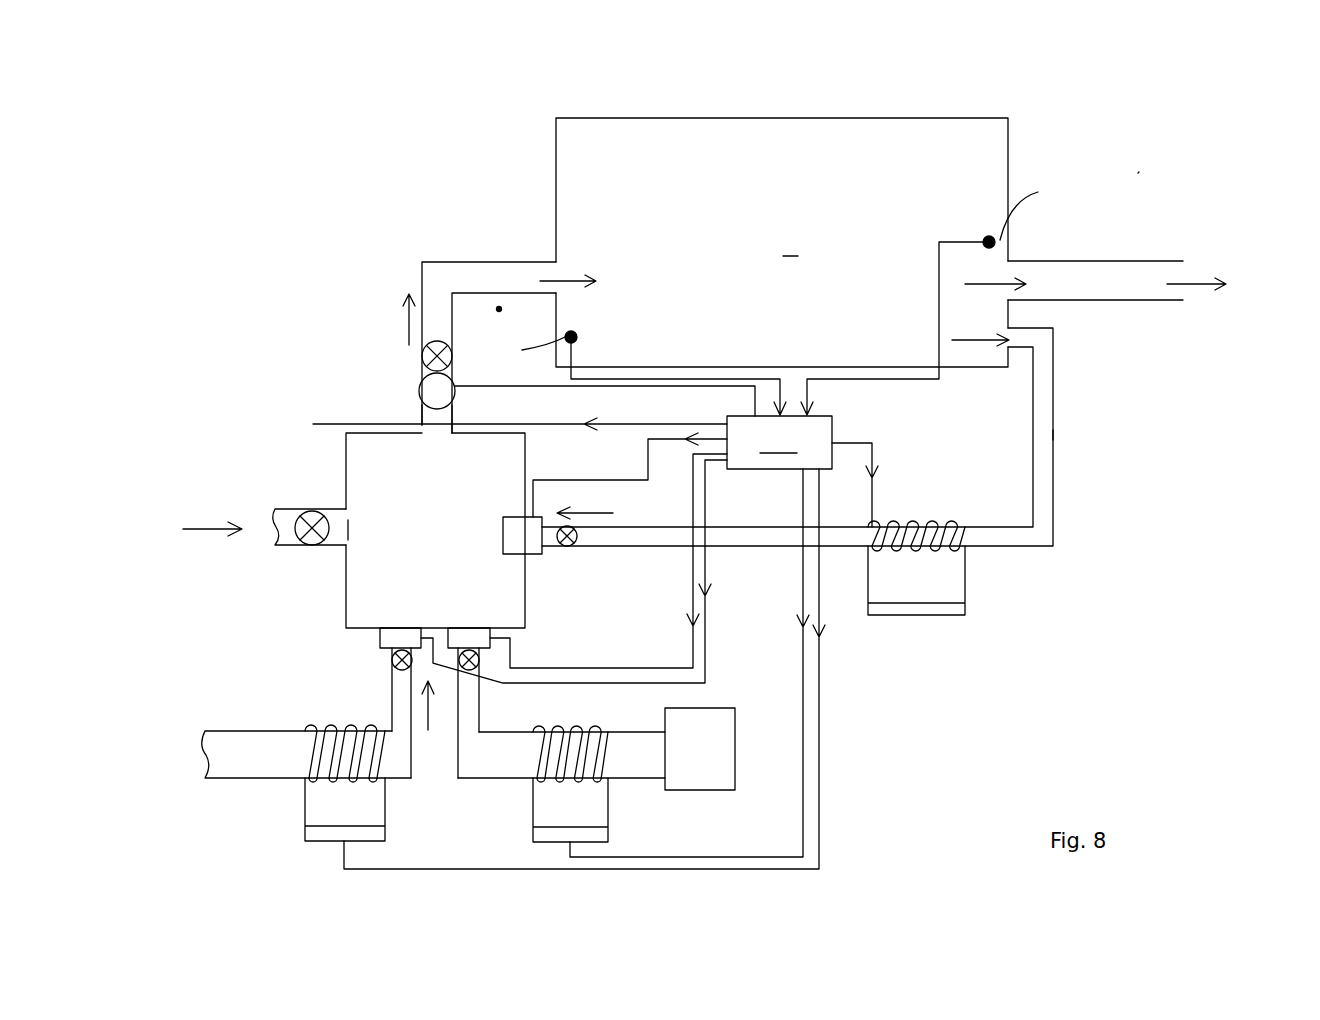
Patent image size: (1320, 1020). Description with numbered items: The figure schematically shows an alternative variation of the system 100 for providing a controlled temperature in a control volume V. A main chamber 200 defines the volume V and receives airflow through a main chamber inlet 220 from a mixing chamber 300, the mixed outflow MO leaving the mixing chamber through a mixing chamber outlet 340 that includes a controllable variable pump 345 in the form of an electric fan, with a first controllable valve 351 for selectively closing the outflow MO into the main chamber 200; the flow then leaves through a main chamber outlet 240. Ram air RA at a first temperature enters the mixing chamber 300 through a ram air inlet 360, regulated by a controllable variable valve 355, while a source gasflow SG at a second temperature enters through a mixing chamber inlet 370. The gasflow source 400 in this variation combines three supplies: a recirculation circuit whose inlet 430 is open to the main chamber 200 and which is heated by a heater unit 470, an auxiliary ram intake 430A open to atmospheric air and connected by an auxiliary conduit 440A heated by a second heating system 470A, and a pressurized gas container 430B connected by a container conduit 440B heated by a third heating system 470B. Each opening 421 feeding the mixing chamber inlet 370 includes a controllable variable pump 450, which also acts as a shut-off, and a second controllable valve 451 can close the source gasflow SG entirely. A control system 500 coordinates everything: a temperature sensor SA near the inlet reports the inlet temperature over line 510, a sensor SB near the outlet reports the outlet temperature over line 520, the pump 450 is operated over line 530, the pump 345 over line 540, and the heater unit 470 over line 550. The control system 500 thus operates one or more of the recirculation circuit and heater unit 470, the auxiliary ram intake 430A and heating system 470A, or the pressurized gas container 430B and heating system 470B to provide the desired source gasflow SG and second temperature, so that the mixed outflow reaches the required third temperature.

The system 100 is at (1133, 162).
The main chamber 200 is at (1008, 158).
The main chamber inlet 220 is at (565, 272).
The main chamber outlet 240 is at (1013, 262).
The mixing chamber 300 is at (527, 465).
The mixing chamber outlet 340 is at (422, 420).
The controllable variable pump 345 is at (455, 393).
The first controllable valve 351 is at (423, 360).
The controllable variable valve 355 is at (313, 509).
The ram air inlet 360 is at (353, 532).
The mixing chamber inlet 370 is at (513, 555).
The gasflow source 400 is at (1055, 437).
The opening 421 is at (550, 548).
The inlet 430 is at (1010, 327).
The auxiliary ram intake 430A is at (222, 780).
The pressurized gas container 430B is at (700, 708).
The auxiliary conduit 440A is at (280, 778).
The container conduit 440B is at (512, 731).
The controllable variable pump 450 is at (537, 558).
The second controllable valve 451 is at (575, 543).
The heater unit 470 is at (966, 572).
The second heating system 470A is at (375, 832).
The third heating system 470B is at (540, 833).
The control system 500 is at (779, 442).
The line 510 is at (655, 379).
The line 520 is at (913, 380).
The line 530 is at (648, 470).
The line 540 is at (690, 386).
The line 550 is at (875, 447).